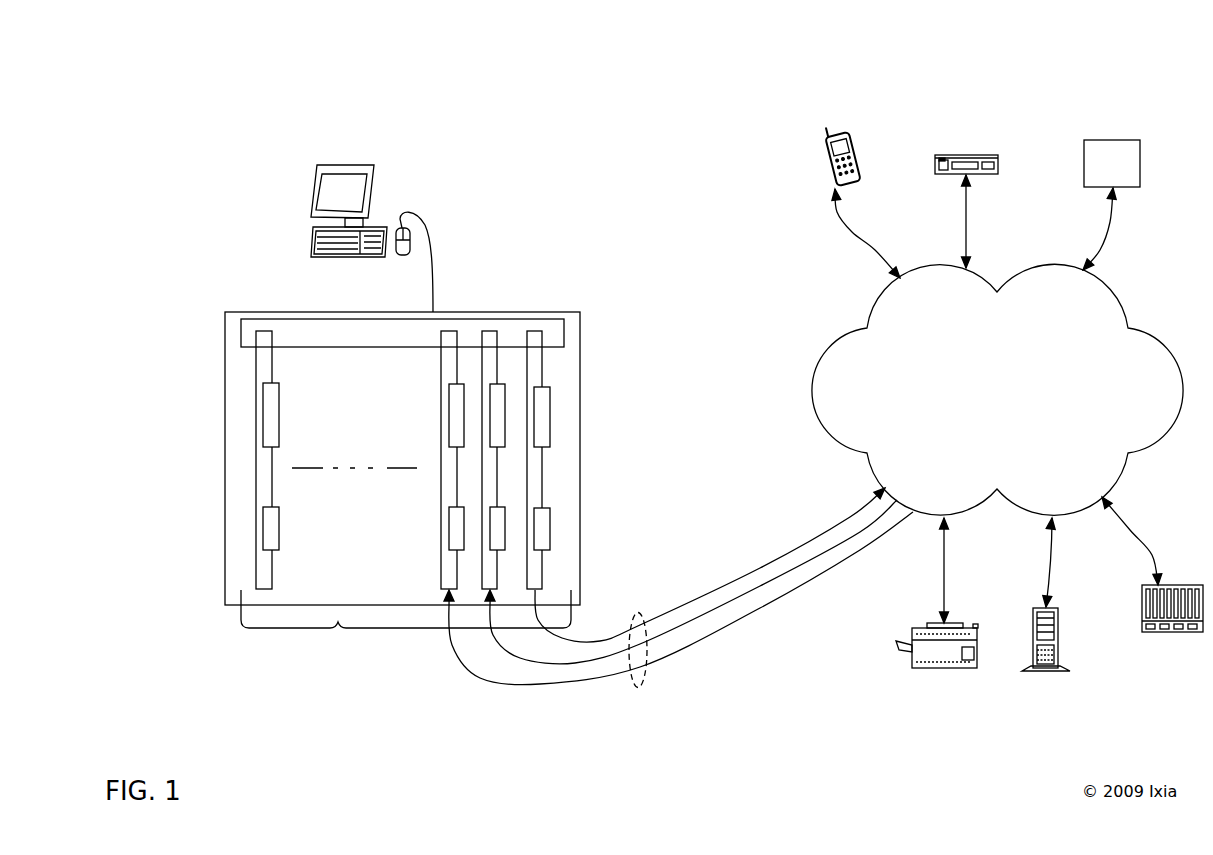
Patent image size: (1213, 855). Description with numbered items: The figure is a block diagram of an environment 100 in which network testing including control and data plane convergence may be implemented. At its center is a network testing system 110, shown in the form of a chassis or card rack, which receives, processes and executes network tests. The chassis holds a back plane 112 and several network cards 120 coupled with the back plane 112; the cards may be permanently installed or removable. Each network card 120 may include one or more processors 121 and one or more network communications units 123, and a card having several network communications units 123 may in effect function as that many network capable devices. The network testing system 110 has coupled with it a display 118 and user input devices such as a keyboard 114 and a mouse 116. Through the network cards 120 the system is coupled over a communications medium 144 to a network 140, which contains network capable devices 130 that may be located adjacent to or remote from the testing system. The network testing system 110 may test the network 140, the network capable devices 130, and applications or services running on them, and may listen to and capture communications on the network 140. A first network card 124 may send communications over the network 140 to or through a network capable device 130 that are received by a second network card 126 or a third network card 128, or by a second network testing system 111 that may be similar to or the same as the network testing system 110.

The environment 100 is at (410, 48).
The network testing system 110 is at (495, 490).
The second network testing system 111 is at (1111, 205).
The back plane 112 is at (566, 334).
The keyboard 114 is at (312, 240).
The mouse 116 is at (402, 255).
The display 118 is at (318, 193).
The network cards 120 is at (502, 522).
The processor 121 is at (551, 415).
The network communications unit 123 is at (551, 532).
The first network card 124 is at (645, 460).
The second network card 126 is at (493, 462).
The third network card 128 is at (450, 491).
The network capable devices 130 is at (1005, 398).
The network 140 is at (997, 389).
The communications medium 144 is at (638, 688).